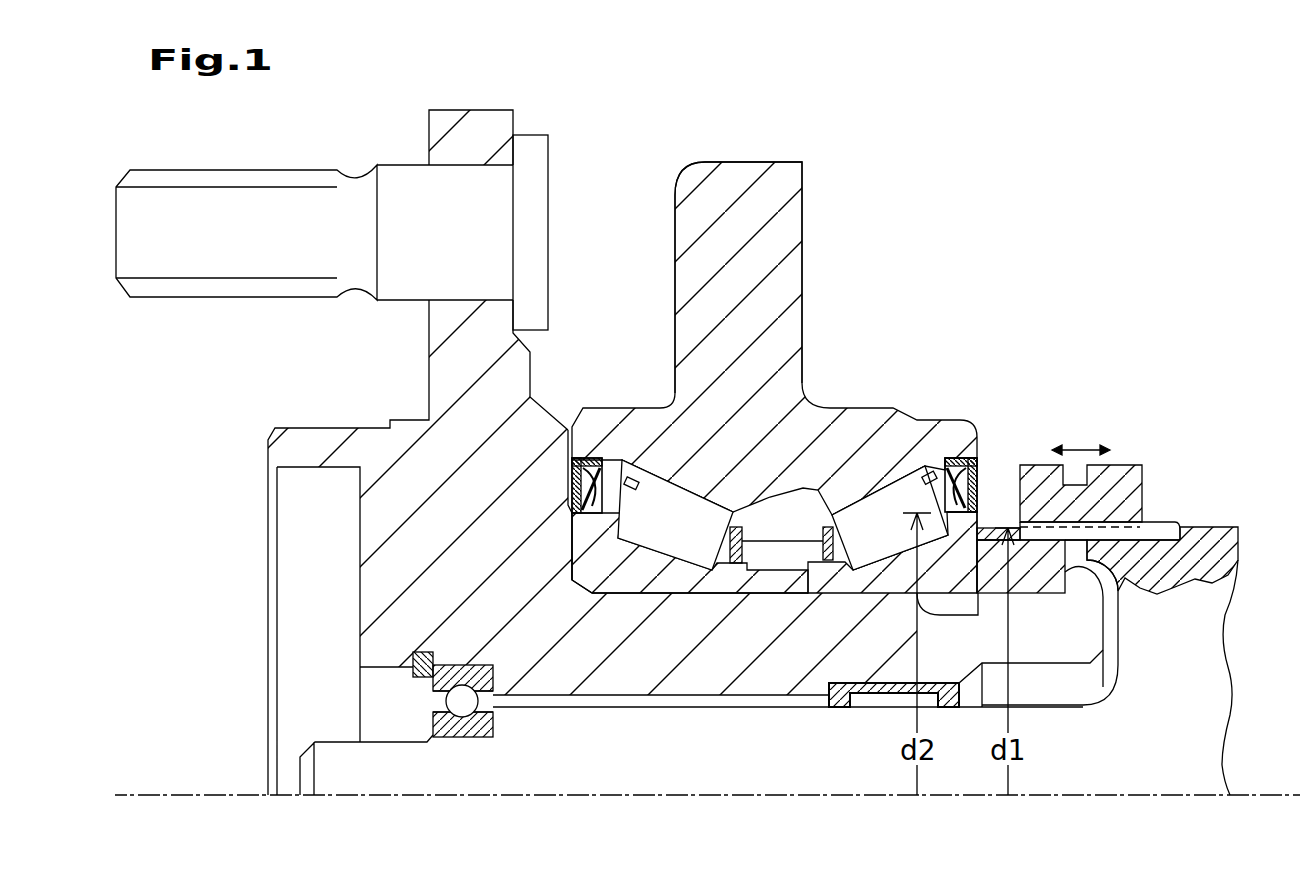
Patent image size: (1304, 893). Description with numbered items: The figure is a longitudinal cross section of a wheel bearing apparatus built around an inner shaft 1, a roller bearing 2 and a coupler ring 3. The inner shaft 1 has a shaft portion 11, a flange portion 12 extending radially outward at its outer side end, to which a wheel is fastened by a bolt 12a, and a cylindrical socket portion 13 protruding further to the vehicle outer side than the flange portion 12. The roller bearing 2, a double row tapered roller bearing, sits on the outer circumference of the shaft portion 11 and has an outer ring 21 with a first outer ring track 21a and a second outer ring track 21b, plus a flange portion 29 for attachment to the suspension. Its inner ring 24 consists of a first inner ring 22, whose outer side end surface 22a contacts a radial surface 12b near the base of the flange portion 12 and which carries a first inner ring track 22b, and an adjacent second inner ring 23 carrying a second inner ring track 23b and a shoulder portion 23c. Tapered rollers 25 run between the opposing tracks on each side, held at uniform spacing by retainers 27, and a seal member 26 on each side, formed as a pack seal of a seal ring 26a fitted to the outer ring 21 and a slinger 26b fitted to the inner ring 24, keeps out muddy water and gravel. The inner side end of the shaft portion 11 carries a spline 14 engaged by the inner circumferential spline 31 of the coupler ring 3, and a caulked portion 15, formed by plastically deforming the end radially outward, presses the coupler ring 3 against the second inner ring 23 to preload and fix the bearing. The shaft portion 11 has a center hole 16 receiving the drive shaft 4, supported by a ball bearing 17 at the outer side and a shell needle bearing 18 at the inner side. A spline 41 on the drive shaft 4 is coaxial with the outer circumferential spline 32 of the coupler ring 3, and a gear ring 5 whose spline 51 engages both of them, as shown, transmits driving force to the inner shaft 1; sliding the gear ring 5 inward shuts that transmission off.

The inner shaft 1 is at (669, 697).
The shaft portion 11 is at (752, 708).
The flange portion 12 is at (428, 124).
The bolt 12a is at (548, 151).
The radial surface 12b is at (590, 597).
The cylindrical socket portion 13 is at (310, 428).
The spline 14 is at (995, 615).
The caulked portion 15 is at (1104, 630).
The center hole 16 is at (1092, 706).
The ball bearing 17 is at (465, 738).
The shell needle bearing 18 is at (862, 708).
The roller bearing 2 is at (795, 425).
The outer ring 21 is at (774, 338).
The first outer ring track 21a is at (666, 482).
The second outer ring track 21b is at (890, 484).
The first inner ring 22 is at (652, 579).
The outer side end surface 22a is at (575, 556).
The first inner ring track 22b is at (678, 597).
The second inner ring 23 is at (891, 578).
The second inner ring track 23b is at (872, 575).
The shoulder portion 23c is at (948, 540).
The inner ring 24 is at (737, 600).
The tapered rollers 25 is at (700, 510).
The seal member 26 is at (816, 413).
The seal ring 26a is at (592, 470).
The slinger 26b is at (665, 356).
The retainers 27 is at (783, 541).
The flange portion 29 is at (803, 208).
The coupler ring 3 is at (1042, 575).
The inner circumferential spline 31 is at (1062, 607).
The outer circumferential spline 32 is at (1000, 535).
The drive shaft 4 is at (1208, 638).
The spline 41 is at (1188, 527).
The gear ring 5 is at (1120, 465).
The spline 51 is at (1150, 523).